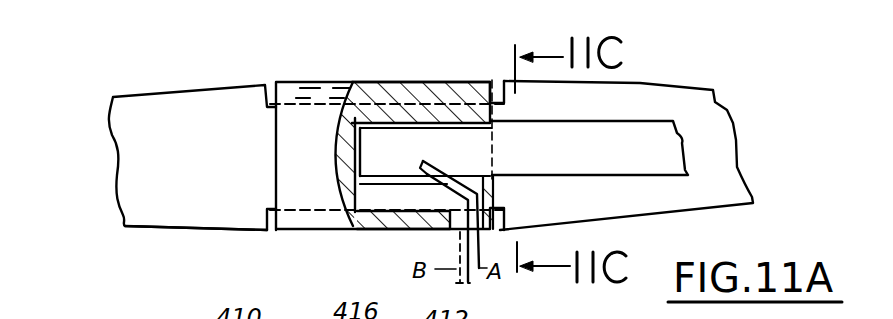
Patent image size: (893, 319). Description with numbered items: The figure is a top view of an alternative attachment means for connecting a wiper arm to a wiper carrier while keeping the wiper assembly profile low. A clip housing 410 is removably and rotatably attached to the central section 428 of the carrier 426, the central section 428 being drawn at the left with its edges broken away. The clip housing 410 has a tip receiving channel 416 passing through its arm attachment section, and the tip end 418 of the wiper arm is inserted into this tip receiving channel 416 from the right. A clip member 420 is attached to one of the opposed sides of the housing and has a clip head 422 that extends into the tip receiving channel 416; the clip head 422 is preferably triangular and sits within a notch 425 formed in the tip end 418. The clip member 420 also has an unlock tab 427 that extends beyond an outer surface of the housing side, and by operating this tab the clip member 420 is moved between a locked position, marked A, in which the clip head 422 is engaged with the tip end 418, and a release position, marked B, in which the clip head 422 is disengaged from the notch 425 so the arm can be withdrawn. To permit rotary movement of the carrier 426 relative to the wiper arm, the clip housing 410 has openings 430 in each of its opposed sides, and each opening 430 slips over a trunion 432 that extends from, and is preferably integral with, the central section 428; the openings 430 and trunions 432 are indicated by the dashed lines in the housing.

The clip housing 410 is at (288, 82).
The tip receiving channel 416 is at (355, 112).
The tip end 418 is at (392, 130).
The clip member 420 is at (443, 228).
The clip head 422 is at (437, 172).
The notch 425 is at (423, 160).
The carrier 426 is at (96, 120).
The unlock tab 427 is at (483, 248).
The central section 428 is at (170, 215).
The openings 430 is at (304, 95).
The trunion 432 is at (331, 96).